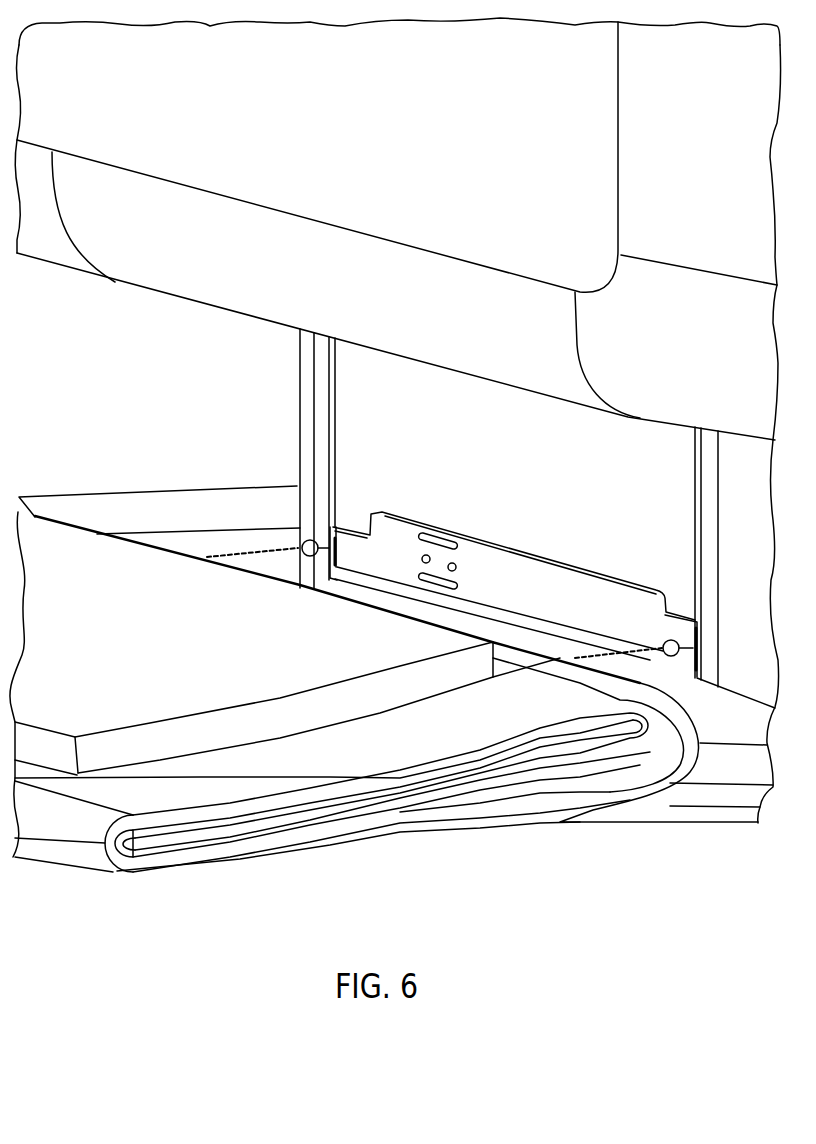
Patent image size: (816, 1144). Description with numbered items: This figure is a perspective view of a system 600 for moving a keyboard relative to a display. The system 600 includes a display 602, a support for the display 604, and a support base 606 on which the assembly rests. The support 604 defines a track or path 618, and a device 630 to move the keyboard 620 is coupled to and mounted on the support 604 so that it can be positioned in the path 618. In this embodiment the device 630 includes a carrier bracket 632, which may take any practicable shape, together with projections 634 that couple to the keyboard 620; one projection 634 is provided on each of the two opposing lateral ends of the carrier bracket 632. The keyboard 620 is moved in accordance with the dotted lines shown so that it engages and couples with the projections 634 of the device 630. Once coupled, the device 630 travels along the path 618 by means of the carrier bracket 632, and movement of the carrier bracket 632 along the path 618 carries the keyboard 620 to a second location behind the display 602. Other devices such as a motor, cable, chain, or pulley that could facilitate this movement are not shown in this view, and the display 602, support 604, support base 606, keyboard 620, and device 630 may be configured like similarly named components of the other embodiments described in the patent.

The system 600 is at (597, 930).
The display 602 is at (152, 292).
The support for the display 604 is at (299, 440).
The support base 606 is at (106, 490).
The path 618 is at (691, 521).
The keyboard 620 is at (250, 856).
The device to move the keyboard 630 is at (407, 503).
The carrier bracket 632 is at (500, 540).
The projections 634 is at (309, 540).